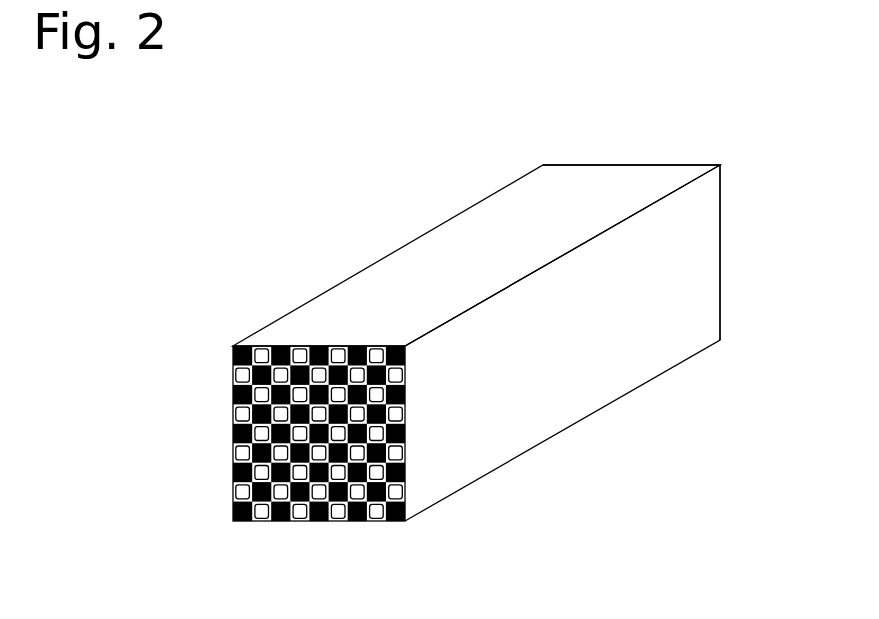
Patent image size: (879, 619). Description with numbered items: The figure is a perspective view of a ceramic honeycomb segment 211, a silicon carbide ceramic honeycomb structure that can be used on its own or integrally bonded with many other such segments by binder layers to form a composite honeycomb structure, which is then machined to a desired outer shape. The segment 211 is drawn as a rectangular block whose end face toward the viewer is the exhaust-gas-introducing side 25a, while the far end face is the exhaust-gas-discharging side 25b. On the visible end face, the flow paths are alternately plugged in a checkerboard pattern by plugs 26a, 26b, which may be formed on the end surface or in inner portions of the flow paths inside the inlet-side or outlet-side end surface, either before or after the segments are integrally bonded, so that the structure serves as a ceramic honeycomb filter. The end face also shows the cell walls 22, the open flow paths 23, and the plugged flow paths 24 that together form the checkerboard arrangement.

The honeycomb segment 211 is at (321, 293).
The exhaust-gas-introducing side 25a is at (236, 488).
The exhaust-gas-discharging side 25b is at (727, 183).
The plug 26a is at (241, 396).
The plug 26b is at (210, 420).
The partition walls 22 is at (281, 484).
The cells 23 is at (338, 513).
The plugging portions 24 is at (355, 510).